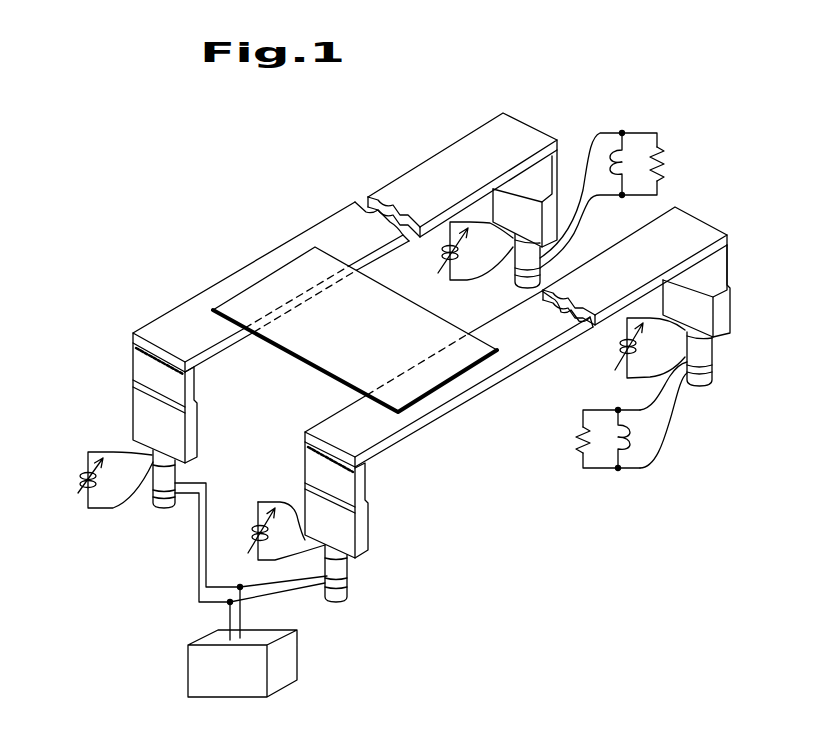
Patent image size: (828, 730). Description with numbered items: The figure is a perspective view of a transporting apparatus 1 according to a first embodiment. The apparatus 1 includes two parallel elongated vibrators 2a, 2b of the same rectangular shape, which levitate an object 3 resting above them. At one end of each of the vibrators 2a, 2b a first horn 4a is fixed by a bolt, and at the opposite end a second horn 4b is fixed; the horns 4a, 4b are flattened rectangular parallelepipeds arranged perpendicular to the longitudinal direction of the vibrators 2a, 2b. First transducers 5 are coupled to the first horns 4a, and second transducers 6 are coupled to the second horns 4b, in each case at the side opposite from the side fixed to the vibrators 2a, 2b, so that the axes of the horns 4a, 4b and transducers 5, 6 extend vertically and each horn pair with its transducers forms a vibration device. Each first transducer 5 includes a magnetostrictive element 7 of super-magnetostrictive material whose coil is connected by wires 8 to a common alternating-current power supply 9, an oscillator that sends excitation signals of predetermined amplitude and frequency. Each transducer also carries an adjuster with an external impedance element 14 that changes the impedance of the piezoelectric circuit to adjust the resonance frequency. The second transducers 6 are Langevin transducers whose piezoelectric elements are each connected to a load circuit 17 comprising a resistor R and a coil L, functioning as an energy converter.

The transporting apparatus 1 is at (121, 226).
The vibrator 2a is at (328, 218).
The vibrator 2b is at (467, 402).
The object 3 is at (302, 356).
The first horn 4a is at (132, 405).
The second horn 4b is at (507, 197).
The first transducer 5 is at (136, 512).
The second transducer 6 is at (498, 274).
The magnetostrictive element 7 is at (168, 512).
The wires 8 is at (208, 568).
The alternating-current power supply 9 is at (200, 663).
The external impedance element 14 is at (82, 473).
The load circuit 17 is at (606, 117).
The coil L is at (632, 143).
The resistor R is at (665, 155).